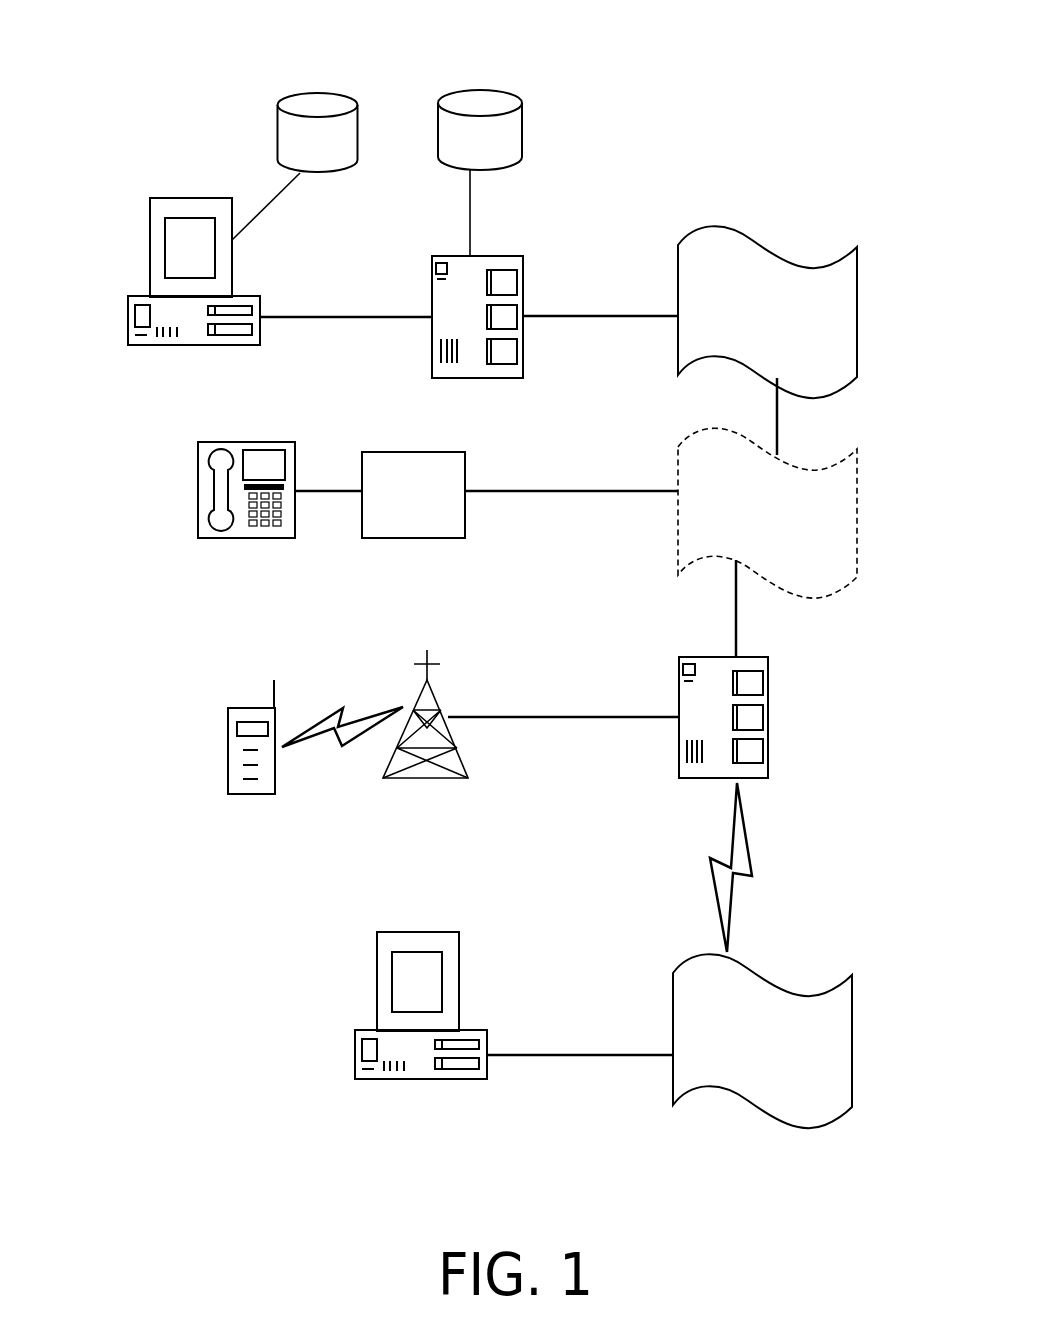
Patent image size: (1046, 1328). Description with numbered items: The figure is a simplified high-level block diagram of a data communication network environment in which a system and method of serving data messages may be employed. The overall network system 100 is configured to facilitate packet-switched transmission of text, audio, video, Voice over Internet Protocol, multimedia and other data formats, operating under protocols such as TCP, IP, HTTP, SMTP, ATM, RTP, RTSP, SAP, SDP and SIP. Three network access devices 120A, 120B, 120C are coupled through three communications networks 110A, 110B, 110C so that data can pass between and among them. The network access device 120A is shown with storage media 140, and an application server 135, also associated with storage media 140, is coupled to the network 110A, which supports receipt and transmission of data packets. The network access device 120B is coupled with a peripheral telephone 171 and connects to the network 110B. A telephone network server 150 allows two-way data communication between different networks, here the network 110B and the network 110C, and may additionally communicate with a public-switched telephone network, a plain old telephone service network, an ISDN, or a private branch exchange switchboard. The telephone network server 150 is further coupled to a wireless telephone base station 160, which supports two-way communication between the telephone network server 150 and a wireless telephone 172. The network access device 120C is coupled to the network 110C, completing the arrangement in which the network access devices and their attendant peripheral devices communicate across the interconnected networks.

The network system 100 is at (762, 97).
The storage media 140 is at (308, 88).
The network access device 120A is at (146, 252).
The application server 135 is at (515, 252).
The network 110A is at (757, 232).
The network 110B is at (856, 540).
The network access device 120B is at (405, 452).
The telephone 171 is at (196, 476).
The wireless telephone 172 is at (216, 737).
The wireless telephone base station 160 is at (432, 780).
The telephone network server 150 is at (772, 726).
The network 110C is at (843, 985).
The network access device 120C is at (412, 1078).